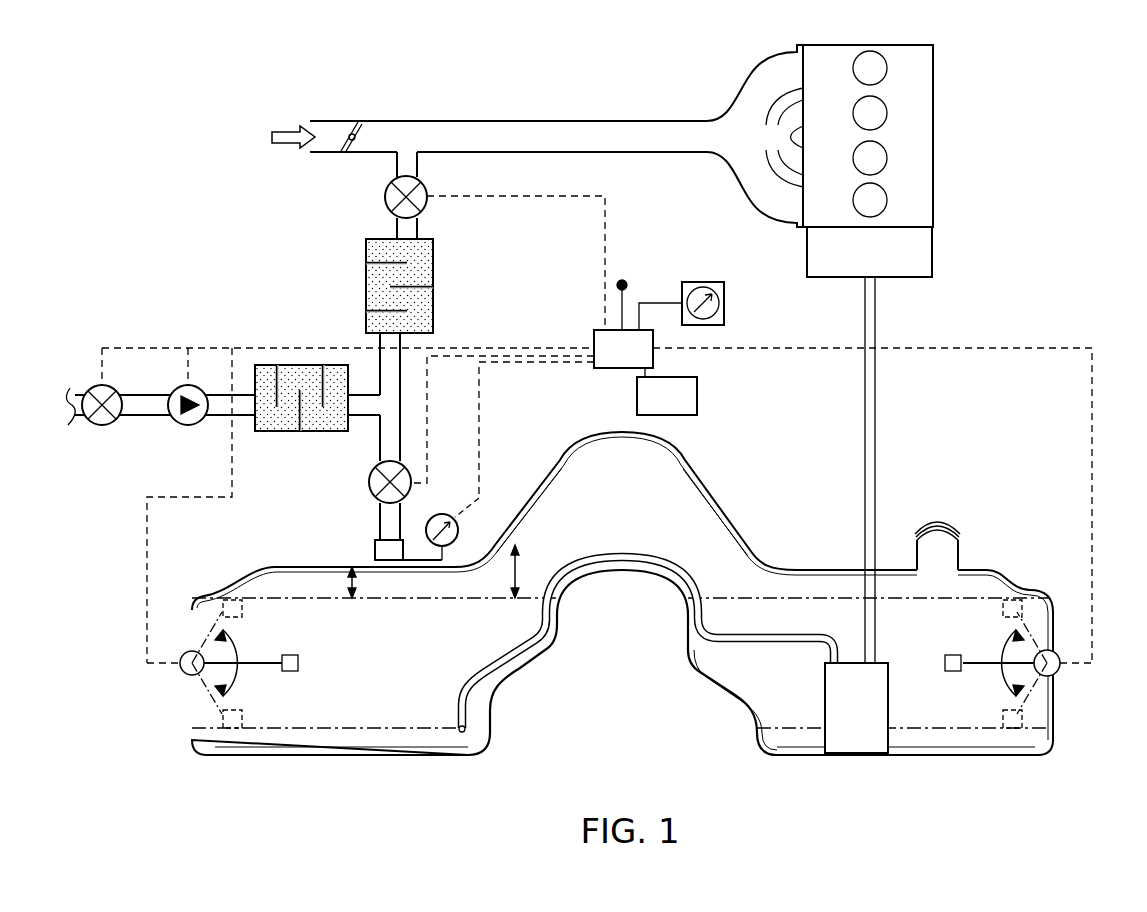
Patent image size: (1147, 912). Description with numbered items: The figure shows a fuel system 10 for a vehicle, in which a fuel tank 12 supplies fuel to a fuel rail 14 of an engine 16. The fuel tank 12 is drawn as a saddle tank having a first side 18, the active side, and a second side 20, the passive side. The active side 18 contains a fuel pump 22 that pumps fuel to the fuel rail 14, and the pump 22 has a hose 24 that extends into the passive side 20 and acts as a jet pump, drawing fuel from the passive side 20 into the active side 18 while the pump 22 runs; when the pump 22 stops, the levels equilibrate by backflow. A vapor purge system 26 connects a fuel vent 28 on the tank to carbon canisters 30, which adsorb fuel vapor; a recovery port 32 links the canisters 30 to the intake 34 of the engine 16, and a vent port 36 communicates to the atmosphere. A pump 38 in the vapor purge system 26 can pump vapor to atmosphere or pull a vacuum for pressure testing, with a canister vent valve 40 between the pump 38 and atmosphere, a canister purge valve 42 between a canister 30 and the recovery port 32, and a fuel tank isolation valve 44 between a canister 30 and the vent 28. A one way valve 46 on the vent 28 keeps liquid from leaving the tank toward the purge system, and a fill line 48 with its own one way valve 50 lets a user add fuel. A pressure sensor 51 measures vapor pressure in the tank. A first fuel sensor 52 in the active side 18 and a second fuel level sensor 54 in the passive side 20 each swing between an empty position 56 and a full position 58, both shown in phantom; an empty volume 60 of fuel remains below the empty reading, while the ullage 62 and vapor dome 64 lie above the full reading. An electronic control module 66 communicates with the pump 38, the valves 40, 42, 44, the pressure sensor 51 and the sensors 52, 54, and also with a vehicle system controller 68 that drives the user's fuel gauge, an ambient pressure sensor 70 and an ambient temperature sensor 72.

The fuel system 10 is at (998, 296).
The fuel tank 12 is at (622, 593).
The fuel rail 14 is at (932, 250).
The engine 16 is at (933, 140).
The first side 18 is at (915, 633).
The second side 20 is at (365, 664).
The fuel pump 22 is at (825, 700).
The hose 24 is at (517, 667).
The vapor purge system 26 is at (238, 258).
The fuel vent 28 is at (373, 557).
The carbon canister 30 is at (433, 280).
The recovery port 32 is at (397, 165).
The intake 34 is at (570, 128).
The vent port 36 is at (360, 127).
The pump 38 is at (188, 425).
The canister vent valve 40 is at (102, 425).
The canister purge valve 42 is at (384, 198).
The fuel tank isolation valve 44 is at (427, 528).
The one way valve 46 is at (378, 530).
The fill line 48 is at (958, 562).
The one way valve 50 is at (935, 525).
The pressure sensor 51 is at (459, 532).
The first fuel sensor 52 is at (1040, 638).
The second fuel level sensor 54 is at (186, 674).
The empty position 56 is at (215, 742).
The full position 58 is at (212, 590).
The empty volume 60 is at (961, 742).
The ullage 62 is at (350, 582).
The vapor dome 64 is at (624, 457).
The electronic control module 66 is at (594, 338).
The vehicle system controller 68 is at (697, 396).
The ambient pressure sensor 70 is at (724, 302).
The ambient temperature sensor 72 is at (625, 295).